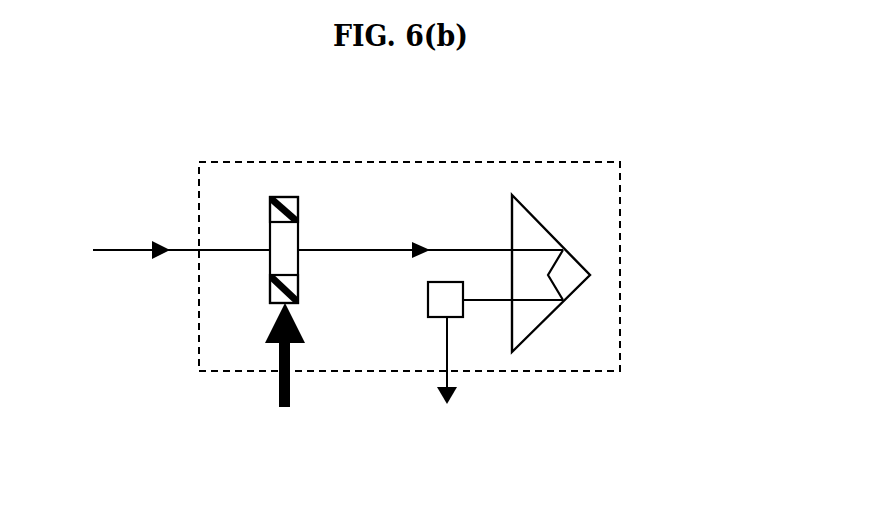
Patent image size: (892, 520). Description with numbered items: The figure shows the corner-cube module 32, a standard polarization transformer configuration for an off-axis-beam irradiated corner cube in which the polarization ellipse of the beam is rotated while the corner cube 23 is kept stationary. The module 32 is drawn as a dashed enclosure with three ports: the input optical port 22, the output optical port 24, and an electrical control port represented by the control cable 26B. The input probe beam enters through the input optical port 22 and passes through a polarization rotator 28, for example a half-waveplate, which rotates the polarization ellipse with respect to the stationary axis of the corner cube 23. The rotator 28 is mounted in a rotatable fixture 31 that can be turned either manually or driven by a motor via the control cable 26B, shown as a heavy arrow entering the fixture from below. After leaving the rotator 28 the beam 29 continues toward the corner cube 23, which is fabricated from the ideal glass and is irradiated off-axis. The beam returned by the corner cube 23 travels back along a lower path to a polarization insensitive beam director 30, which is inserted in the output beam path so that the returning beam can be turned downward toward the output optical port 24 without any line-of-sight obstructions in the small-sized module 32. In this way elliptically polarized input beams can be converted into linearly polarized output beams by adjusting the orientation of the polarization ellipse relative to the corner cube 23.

The input optical port 22 is at (156, 253).
The corner cube 23 is at (532, 217).
The output optical port 24 is at (449, 381).
The control cable 26B is at (293, 376).
The polarization rotator 28 is at (272, 232).
The modulated light beam 29 is at (453, 248).
The polarization insensitive beam director 30 is at (428, 300).
The rotatable fixture 31 is at (266, 250).
The corner-cube module 32 is at (677, 312).